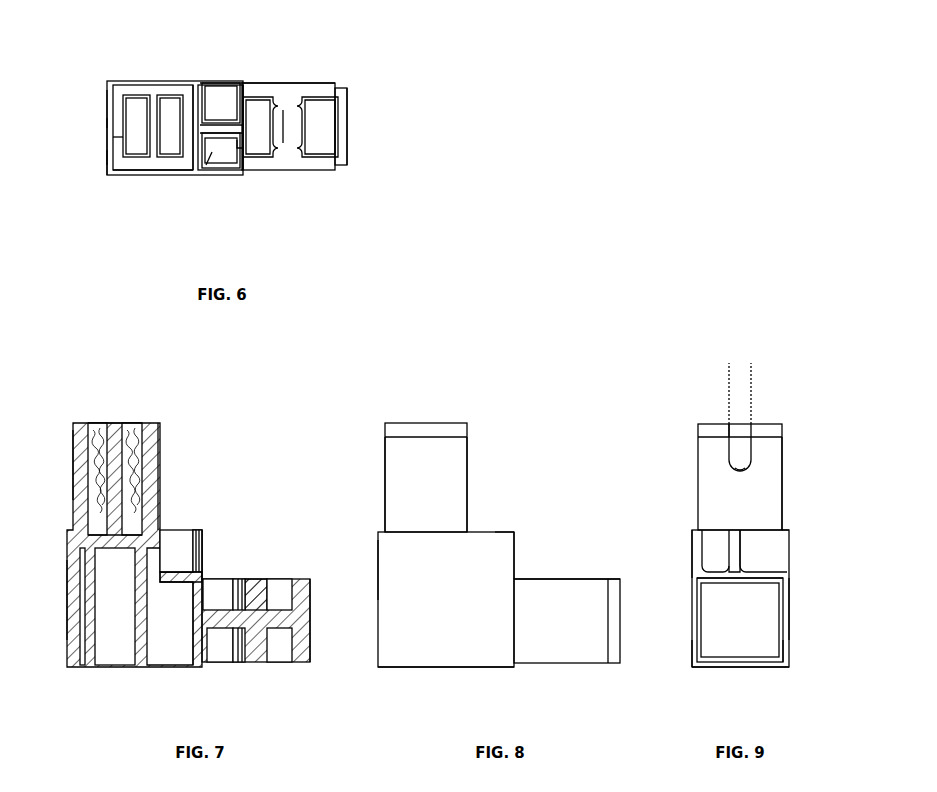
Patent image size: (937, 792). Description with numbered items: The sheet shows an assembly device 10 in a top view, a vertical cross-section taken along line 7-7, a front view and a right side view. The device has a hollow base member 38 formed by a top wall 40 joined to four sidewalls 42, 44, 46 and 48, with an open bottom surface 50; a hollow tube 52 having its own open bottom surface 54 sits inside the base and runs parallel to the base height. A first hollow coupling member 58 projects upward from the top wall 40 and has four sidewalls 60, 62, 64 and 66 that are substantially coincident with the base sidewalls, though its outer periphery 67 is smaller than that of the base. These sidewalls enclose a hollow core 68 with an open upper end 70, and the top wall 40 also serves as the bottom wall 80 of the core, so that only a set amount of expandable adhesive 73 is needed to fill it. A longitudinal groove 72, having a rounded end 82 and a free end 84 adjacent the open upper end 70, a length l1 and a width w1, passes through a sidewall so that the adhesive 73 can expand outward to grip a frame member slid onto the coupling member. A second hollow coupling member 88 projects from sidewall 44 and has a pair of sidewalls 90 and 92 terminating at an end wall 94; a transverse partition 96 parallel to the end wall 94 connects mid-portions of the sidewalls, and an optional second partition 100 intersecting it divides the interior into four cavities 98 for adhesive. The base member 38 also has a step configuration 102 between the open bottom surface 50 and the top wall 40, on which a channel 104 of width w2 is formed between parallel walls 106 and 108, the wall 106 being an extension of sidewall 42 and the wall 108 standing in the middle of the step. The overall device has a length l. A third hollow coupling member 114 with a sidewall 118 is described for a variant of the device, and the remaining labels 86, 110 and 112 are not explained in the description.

In FIG. 6, the assembly device 10 is at (346, 38).
In FIG. 7, the assembly device 10 is at (234, 433).
In FIG. 8, the assembly device 10 is at (543, 434).
In FIG. 9, the assembly device 10 is at (784, 387).
In FIG. 6, the hollow base member 38 is at (104, 119).
In FIG. 7, the hollow base member 38 is at (64, 582).
In FIG. 8, the hollow base member 38 is at (520, 540).
In FIG. 7, the top wall 40 is at (66, 544).
In FIG. 8, the top wall 40 is at (384, 520).
In FIG. 9, the top wall 40 is at (700, 530).
In FIG. 6, the sidewall 42 is at (120, 80).
In FIG. 8, the sidewall 42 is at (446, 599).
In FIG. 9, the sidewall 42 is at (692, 630).
In FIG. 6, the sidewall 44 is at (222, 98).
In FIG. 7, the sidewall 44 is at (205, 666).
In FIG. 8, the sidewall 44 is at (516, 566).
In FIG. 6, the sidewall 46 is at (105, 90).
In FIG. 9, the sidewall 46 is at (790, 605).
In FIG. 6, the sidewall 48 is at (106, 153).
In FIG. 7, the sidewall 48 is at (67, 614).
In FIG. 8, the sidewall 48 is at (380, 578).
In FIG. 7, the open bottom surface 50 is at (160, 670).
In FIG. 8, the open bottom surface 50 is at (420, 669).
In FIG. 9, the open bottom surface 50 is at (738, 668).
In FIG. 7, the hollow tube 52 is at (100, 672).
In FIG. 7, the open bottom surface 54 is at (131, 670).
In FIG. 6, the first hollow coupling member 58 is at (111, 105).
In FIG. 7, the first hollow coupling member 58 is at (162, 440).
In FIG. 6, the sidewall 60 is at (173, 82).
In FIG. 8, the sidewall 60 is at (426, 477).
In FIG. 9, the sidewall 60 is at (698, 482).
In FIG. 6, the sidewall 62 is at (200, 84).
In FIG. 7, the sidewall 62 is at (160, 487).
In FIG. 8, the sidewall 62 is at (470, 478).
In FIG. 6, the sidewall 64 is at (160, 172).
In FIG. 9, the sidewall 64 is at (784, 493).
In FIG. 6, the sidewall 66 is at (110, 137).
In FIG. 7, the sidewall 66 is at (72, 478).
In FIG. 8, the sidewall 66 is at (384, 474).
In FIG. 7, the outer periphery 67 is at (72, 444).
In FIG. 6, the hollow core 68 is at (164, 93).
In FIG. 7, the hollow core 68 is at (82, 420).
In FIG. 7, the open upper end 70 is at (108, 424).
In FIG. 8, the open upper end 70 is at (432, 422).
In FIG. 9, the open upper end 70 is at (762, 424).
In FIG. 6, the longitudinal groove 72 is at (121, 117).
In FIG. 7, the longitudinal groove 72 is at (97, 479).
In FIG. 9, the longitudinal groove 72 is at (752, 450).
In FIG. 7, the expandable adhesive 73 is at (95, 428).
In FIG. 7, the bottom wall 80 is at (88, 522).
In FIG. 9, the rounded end 82 is at (750, 470).
In FIG. 9, the free end 84 is at (732, 424).
In FIG. 6, the second channel 86 is at (153, 118).
In FIG. 7, the second channel 86 is at (127, 428).
In FIG. 6, the second hollow coupling member 88 is at (308, 84).
In FIG. 7, the second hollow coupling member 88 is at (280, 578).
In FIG. 8, the second hollow coupling member 88 is at (588, 576).
In FIG. 9, the second hollow coupling member 88 is at (792, 578).
In FIG. 6, the sidewall 90 is at (315, 172).
In FIG. 8, the sidewall 90 is at (567, 621).
In FIG. 9, the sidewall 90 is at (697, 586).
In FIG. 6, the sidewall 92 is at (283, 83).
In FIG. 9, the sidewall 92 is at (785, 648).
In FIG. 6, the end wall 94 is at (349, 110).
In FIG. 7, the end wall 94 is at (310, 664).
In FIG. 8, the end wall 94 is at (621, 598).
In FIG. 9, the end wall 94 is at (740, 620).
In FIG. 6, the transverse partition 96 is at (287, 140).
In FIG. 7, the transverse partition 96 is at (252, 588).
In FIG. 6, the cavities 98 is at (263, 106).
In FIG. 7, the cavities 98 is at (230, 605).
In FIG. 7, the second partition 100 is at (240, 612).
In FIG. 6, the step configuration 102 is at (245, 82).
In FIG. 7, the step configuration 102 is at (172, 555).
In FIG. 9, the step configuration 102 is at (788, 540).
In FIG. 6, the channel 104 is at (213, 156).
In FIG. 7, the channel 104 is at (172, 532).
In FIG. 6, the wall 106 is at (222, 170).
In FIG. 8, the wall 106 is at (494, 543).
In FIG. 9, the wall 106 is at (696, 544).
In FIG. 6, the wall 108 is at (218, 125).
In FIG. 7, the wall 108 is at (182, 535).
In FIG. 9, the wall 108 is at (745, 537).
In FIG. 7, the partition wall 110 is at (196, 530).
In FIG. 9, the partition wall 110 is at (730, 530).
In FIG. 6, the wall 112 is at (238, 149).
In FIG. 7, the wall 112 is at (203, 553).
In FIG. 9, the third hollow coupling member 114 is at (715, 556).
In FIG. 6, the sidewall 118 is at (198, 168).
In FIG. 6, the line 7- 7 is at (230, 143).
In FIG. 9, the width w1 is at (783, 377).
In FIG. 6, the width w2 is at (223, 139).
In FIG. 9, the width w2 is at (678, 498).
In FIG. 8, the length l is at (363, 664).
In FIG. 9, the length l1 is at (698, 472).